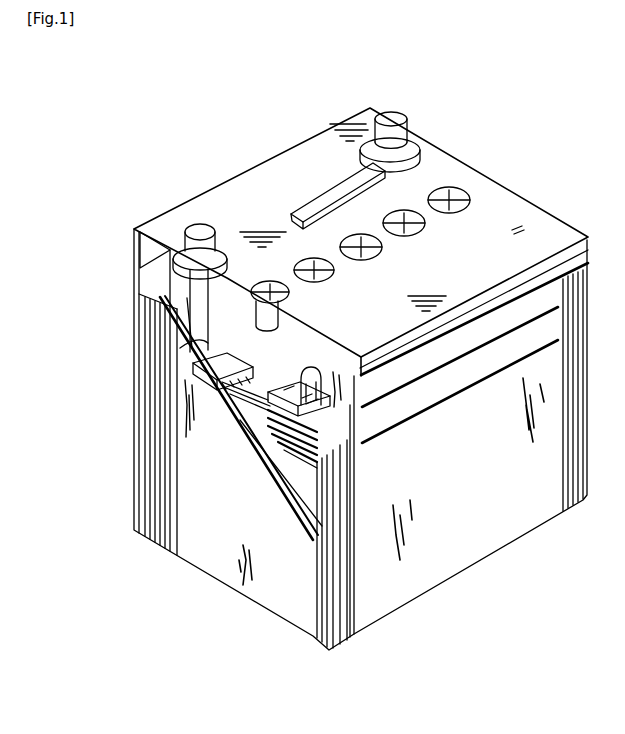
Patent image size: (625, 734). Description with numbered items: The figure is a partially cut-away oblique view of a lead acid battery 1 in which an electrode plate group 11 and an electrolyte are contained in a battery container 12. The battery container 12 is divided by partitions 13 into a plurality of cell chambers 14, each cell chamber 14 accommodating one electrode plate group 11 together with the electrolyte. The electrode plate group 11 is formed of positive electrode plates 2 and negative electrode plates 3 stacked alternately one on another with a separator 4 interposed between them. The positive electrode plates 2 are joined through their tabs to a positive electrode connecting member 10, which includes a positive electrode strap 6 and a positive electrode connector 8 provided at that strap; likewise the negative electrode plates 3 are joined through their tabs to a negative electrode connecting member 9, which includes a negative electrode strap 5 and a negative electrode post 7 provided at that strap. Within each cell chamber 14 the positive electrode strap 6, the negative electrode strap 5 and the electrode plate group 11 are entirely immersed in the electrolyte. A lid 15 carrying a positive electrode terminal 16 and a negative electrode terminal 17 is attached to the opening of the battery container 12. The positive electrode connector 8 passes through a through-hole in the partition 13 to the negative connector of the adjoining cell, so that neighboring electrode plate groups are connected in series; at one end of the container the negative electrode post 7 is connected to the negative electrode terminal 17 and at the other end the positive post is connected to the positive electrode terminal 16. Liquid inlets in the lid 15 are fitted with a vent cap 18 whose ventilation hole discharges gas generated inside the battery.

The lead acid battery 1 is at (291, 120).
The positive electrode plate 2 is at (297, 492).
The negative electrode plate 3 is at (290, 548).
The separator 4 is at (308, 573).
The negative electrode strap 5 is at (193, 368).
The positive electrode strap 6 is at (318, 350).
The negative electrode post 7 is at (197, 322).
The positive electrode connector 8 is at (287, 383).
The negative electrode connecting member 9 is at (97, 323).
The positive electrode connecting member 10 is at (340, 326).
The electrode plate group 11 is at (213, 635).
The battery container 12 is at (178, 544).
The partition 13 is at (302, 342).
The cell chamber 14 is at (139, 260).
The lid 15 is at (520, 208).
The positive electrode terminal 16 is at (396, 113).
The negative electrode terminal 17 is at (200, 224).
The vent cap 18 is at (263, 283).